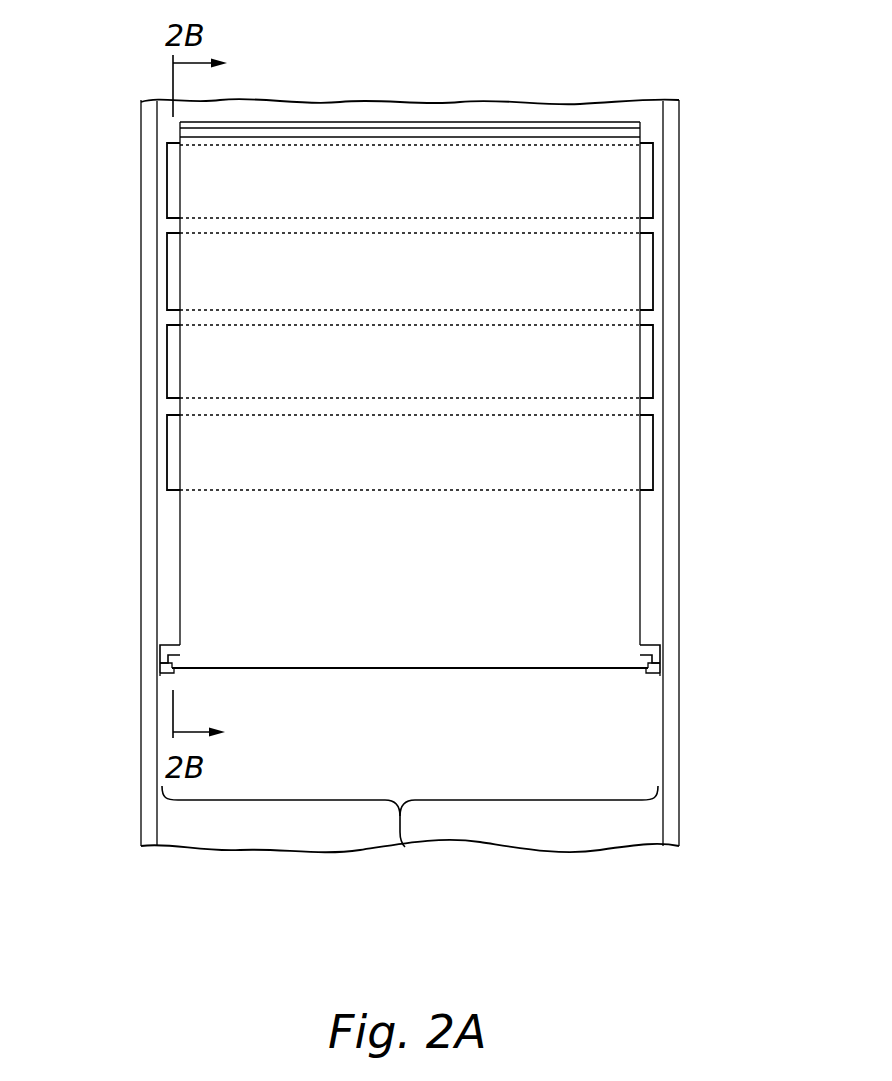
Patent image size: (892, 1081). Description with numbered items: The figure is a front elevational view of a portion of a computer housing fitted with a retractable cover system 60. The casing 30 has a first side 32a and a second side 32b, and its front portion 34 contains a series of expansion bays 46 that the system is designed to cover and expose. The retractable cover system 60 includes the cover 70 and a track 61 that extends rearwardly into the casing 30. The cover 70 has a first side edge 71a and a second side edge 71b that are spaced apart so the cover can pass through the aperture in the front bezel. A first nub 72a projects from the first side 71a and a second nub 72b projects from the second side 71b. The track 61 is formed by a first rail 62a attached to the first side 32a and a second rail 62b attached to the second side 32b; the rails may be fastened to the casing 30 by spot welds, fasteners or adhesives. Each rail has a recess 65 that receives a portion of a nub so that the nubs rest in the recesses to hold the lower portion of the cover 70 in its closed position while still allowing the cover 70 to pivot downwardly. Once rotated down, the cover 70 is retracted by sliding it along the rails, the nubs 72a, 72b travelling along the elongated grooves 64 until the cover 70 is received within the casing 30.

The casing 30 is at (700, 128).
The first side 32a is at (148, 485).
The second side 32b is at (683, 400).
The front portion 34 is at (342, 110).
The expansion bays 46 is at (167, 180).
The retractable cover system 60 is at (401, 846).
The track 61 is at (190, 688).
The first rail 62a is at (165, 673).
The second rail 62b is at (660, 675).
The elongated grooves 64 is at (170, 648).
The recess 65 is at (164, 680).
The cover 70 is at (617, 226).
The first side edge 71a is at (180, 546).
The second side edge 71b is at (640, 530).
The first nub 72a is at (164, 661).
The second nub 72b is at (656, 660).